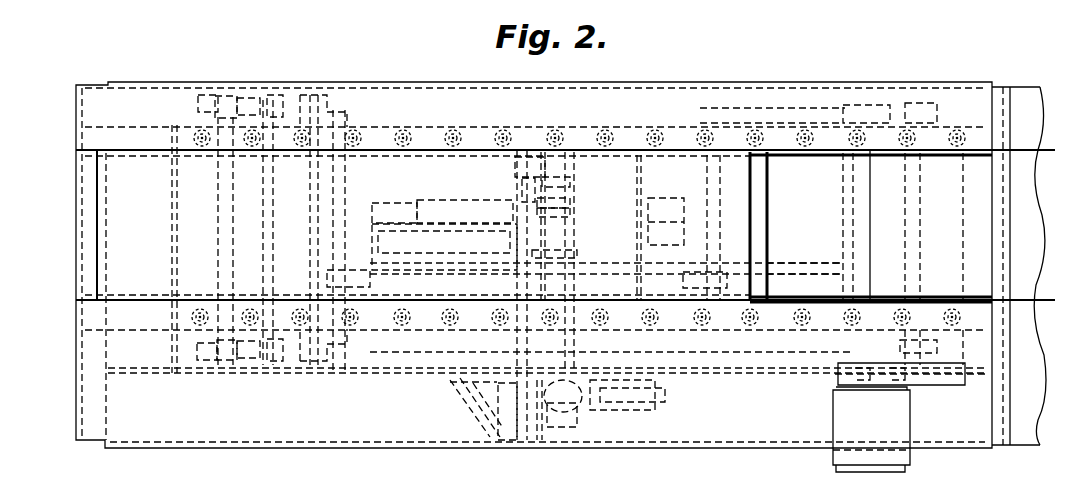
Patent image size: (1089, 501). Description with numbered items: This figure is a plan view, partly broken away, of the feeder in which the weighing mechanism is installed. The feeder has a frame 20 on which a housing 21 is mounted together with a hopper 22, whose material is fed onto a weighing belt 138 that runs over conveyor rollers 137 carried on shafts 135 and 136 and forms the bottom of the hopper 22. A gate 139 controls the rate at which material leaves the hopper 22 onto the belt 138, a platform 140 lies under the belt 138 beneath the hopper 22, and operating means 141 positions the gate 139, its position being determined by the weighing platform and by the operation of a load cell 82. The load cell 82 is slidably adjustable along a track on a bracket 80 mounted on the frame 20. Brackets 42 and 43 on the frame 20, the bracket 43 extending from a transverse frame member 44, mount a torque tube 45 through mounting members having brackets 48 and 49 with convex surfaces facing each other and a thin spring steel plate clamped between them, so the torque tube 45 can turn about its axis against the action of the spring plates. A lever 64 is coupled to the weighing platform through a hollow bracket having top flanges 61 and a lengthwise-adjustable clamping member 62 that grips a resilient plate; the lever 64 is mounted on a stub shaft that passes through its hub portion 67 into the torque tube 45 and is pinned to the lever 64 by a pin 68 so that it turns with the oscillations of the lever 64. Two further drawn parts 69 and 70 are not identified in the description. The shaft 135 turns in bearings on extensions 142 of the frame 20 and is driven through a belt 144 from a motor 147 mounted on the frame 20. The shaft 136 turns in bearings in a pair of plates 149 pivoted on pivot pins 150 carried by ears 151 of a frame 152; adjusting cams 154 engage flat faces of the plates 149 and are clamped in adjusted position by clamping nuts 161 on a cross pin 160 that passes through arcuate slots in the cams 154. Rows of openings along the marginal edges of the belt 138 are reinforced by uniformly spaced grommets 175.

The frame 20 is at (822, 95).
The housing 21 is at (666, 160).
The hopper 22 is at (1040, 150).
The bracket 42 is at (450, 381).
The bracket 43 is at (566, 160).
The transverse frame member 44 is at (577, 230).
The torque tube 45 is at (577, 252).
The bracket 48 is at (497, 437).
The bracket 49 is at (560, 424).
The top flanges 61 is at (372, 243).
The clamping member 62 is at (390, 213).
The lever 64 is at (420, 208).
The hub portion 67 is at (570, 218).
The pin 68 is at (575, 210).
The inclined brace 69 is at (478, 416).
The drive unit 70 is at (635, 412).
The bracket 80 is at (668, 402).
The load cell 82 is at (590, 425).
The shaft 135 is at (917, 270).
The shaft 136 is at (222, 260).
The conveyor rollers 137 is at (185, 232).
The weighing belt 138 is at (474, 131).
The gate 139 is at (762, 240).
The platform 140 is at (832, 127).
The operating means 141 is at (893, 165).
The extensions 142 is at (937, 112).
The belt 144 is at (960, 383).
The motor 147 is at (900, 430).
The plates 149 is at (210, 90).
The pivot pins 150 is at (250, 88).
The ears 151 is at (242, 117).
The frame 152 is at (288, 84).
The adjusting cams 154 is at (275, 85).
The cross pin 160 is at (303, 185).
The clamping nuts 161 is at (333, 85).
The grommets 175 is at (195, 132).